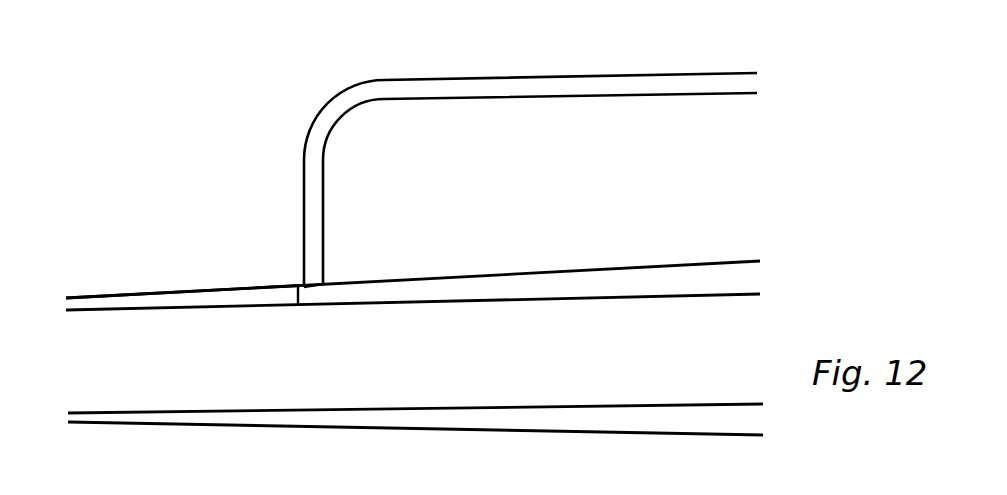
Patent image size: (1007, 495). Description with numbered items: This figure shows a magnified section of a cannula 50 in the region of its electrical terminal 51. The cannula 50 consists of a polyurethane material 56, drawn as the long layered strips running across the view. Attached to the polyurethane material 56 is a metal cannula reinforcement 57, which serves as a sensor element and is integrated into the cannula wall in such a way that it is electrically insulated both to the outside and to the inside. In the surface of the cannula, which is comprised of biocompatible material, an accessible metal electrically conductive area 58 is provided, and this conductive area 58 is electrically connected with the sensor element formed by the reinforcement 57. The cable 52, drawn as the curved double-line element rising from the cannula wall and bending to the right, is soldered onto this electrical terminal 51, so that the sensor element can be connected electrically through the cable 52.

The cannula 50 is at (220, 208).
The electrical terminal 51 is at (298, 292).
The cable 52 is at (446, 86).
The polyurethane material 56 is at (598, 283).
The metal cannula reinforcement 57 is at (113, 294).
The electrically conductive area 58 is at (345, 277).